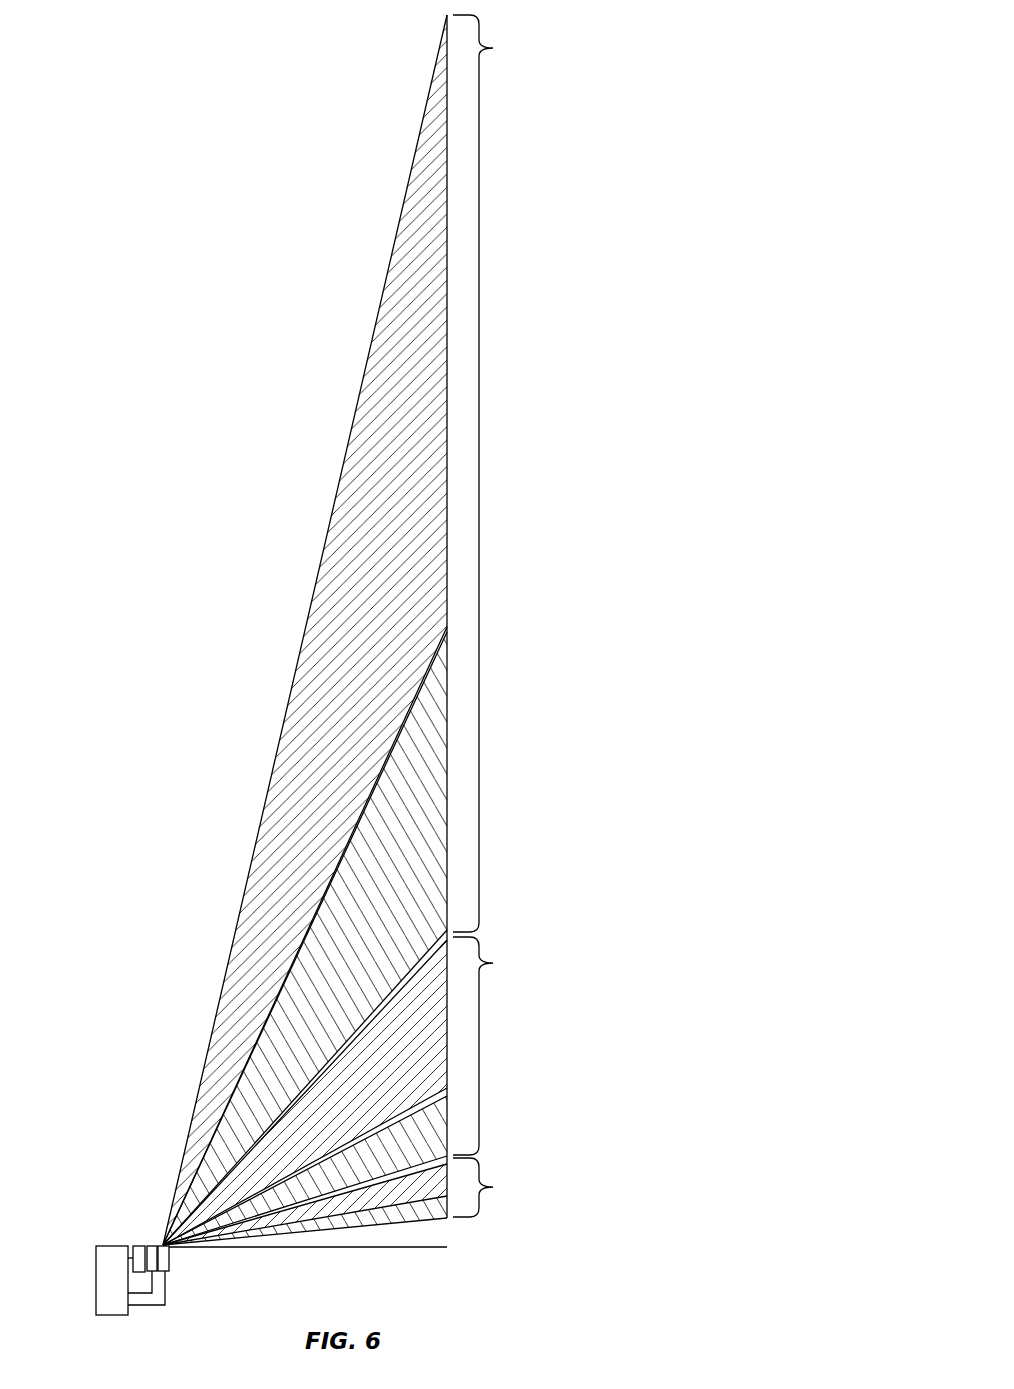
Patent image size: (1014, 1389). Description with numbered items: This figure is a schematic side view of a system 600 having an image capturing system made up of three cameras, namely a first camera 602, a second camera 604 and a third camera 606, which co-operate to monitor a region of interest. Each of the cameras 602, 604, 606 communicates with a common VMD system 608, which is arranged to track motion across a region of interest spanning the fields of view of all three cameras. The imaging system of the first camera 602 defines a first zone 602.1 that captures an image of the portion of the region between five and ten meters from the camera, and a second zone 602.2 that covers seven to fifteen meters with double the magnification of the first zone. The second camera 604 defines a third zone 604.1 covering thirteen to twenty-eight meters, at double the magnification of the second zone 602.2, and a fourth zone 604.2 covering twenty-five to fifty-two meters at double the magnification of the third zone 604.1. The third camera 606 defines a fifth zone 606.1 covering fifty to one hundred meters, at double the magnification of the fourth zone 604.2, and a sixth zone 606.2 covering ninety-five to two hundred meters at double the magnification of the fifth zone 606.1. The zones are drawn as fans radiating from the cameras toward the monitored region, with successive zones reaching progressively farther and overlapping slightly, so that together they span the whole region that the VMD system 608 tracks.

The system 600 is at (160, 588).
The first camera 602 is at (140, 1246).
The first zone 602.1 is at (448, 1210).
The second zone 602.2 is at (447, 1173).
The second camera 604 is at (152, 1279).
The third zone 604.1 is at (447, 1113).
The fourth zone 604.2 is at (447, 1018).
The third camera 606 is at (169, 1258).
The fifth zone 606.1 is at (445, 683).
The sixth zone 606.2 is at (447, 572).
The VMD system 608 is at (113, 1246).